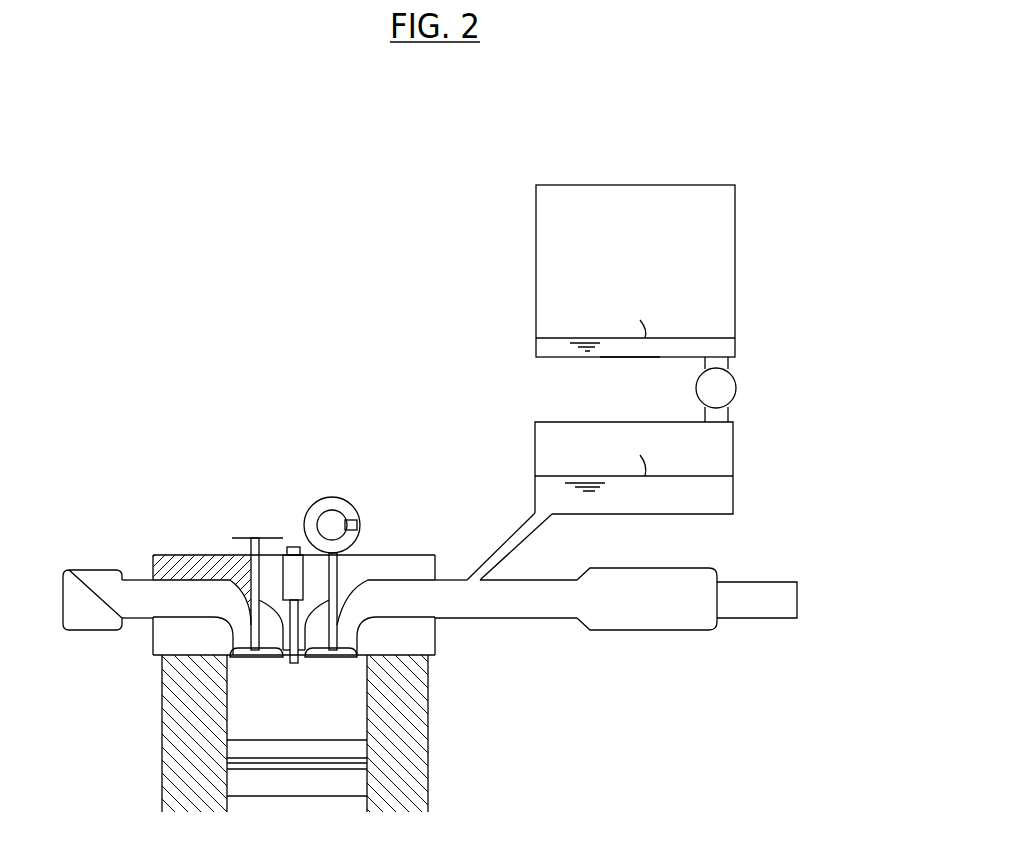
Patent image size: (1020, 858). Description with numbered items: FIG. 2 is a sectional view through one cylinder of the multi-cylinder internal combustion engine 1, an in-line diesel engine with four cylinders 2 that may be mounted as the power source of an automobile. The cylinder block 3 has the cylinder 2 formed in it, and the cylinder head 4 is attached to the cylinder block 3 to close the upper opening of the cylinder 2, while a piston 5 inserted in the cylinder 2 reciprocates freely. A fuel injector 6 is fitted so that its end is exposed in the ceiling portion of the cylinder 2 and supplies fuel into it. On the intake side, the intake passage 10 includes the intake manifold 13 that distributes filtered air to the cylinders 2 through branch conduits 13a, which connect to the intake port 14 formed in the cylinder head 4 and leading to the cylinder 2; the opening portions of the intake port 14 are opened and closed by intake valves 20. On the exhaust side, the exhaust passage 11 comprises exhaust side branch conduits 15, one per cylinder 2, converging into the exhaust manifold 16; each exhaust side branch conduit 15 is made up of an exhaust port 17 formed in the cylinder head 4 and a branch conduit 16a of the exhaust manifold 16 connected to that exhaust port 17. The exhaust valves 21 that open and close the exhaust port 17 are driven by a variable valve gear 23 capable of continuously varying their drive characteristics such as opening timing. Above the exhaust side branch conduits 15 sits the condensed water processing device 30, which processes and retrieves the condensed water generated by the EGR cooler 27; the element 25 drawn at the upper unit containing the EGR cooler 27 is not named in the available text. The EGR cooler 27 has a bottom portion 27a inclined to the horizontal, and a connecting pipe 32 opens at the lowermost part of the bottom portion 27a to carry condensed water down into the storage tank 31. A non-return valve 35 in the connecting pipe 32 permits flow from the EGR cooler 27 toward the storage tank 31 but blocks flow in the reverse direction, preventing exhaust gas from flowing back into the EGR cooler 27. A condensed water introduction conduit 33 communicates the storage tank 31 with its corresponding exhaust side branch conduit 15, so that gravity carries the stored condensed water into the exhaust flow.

The multi-cylinder internal combustion engine 1 is at (257, 395).
The cylinder 2 is at (360, 712).
The cylinder block 3 is at (372, 742).
The cylinder head 4 is at (405, 553).
The piston 5 is at (240, 778).
The fuel injector 6 is at (288, 562).
The intake passage 10 is at (88, 566).
The exhaust passage 11 is at (745, 580).
The intake manifold 13 is at (80, 633).
The branch conduit 13a is at (133, 620).
The intake port 14 is at (170, 598).
The exhaust side branch conduit 15 is at (585, 665).
The exhaust manifold 16 is at (660, 632).
The branch conduit 16a is at (540, 605).
The exhaust port 17 is at (377, 605).
The intake valve 20 is at (247, 598).
The exhaust valve 21 is at (340, 597).
The variable valve gear 23 is at (329, 497).
The water tank 25 is at (640, 185).
The EGR cooler 27 is at (563, 198).
The bottom portion 27a is at (630, 357).
The condensed water processing device 30 is at (775, 346).
The storage tank 31 is at (735, 462).
The connecting pipe 32 is at (724, 412).
The condensed water introduction conduit 33 is at (515, 537).
The non-return valve 35 is at (722, 388).